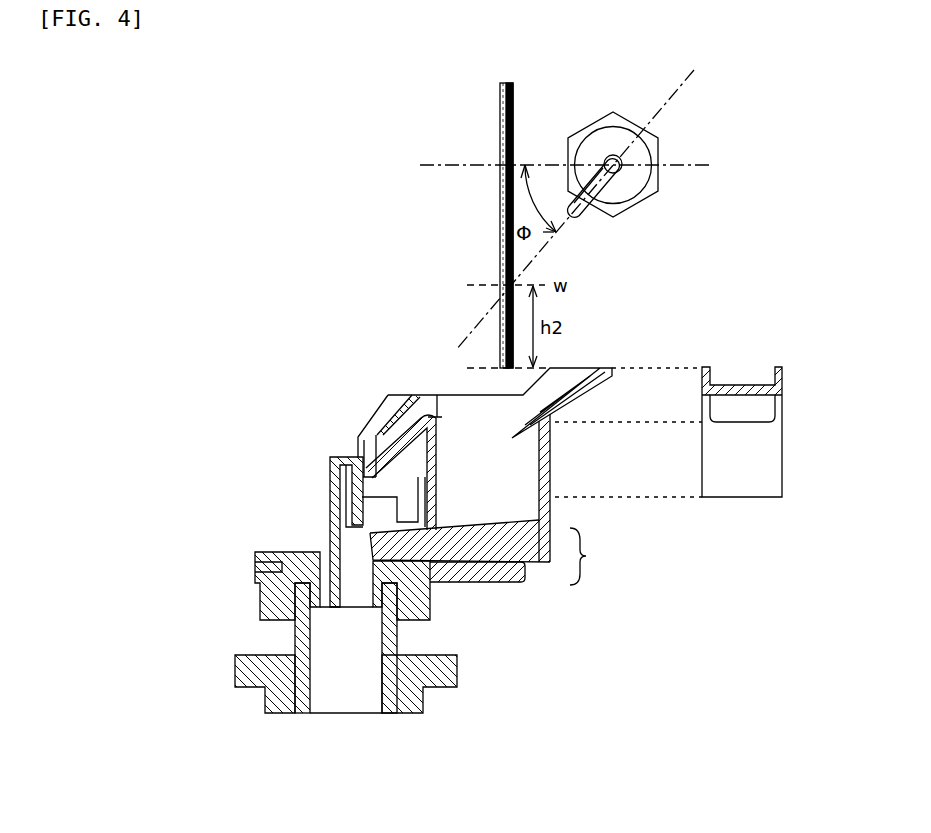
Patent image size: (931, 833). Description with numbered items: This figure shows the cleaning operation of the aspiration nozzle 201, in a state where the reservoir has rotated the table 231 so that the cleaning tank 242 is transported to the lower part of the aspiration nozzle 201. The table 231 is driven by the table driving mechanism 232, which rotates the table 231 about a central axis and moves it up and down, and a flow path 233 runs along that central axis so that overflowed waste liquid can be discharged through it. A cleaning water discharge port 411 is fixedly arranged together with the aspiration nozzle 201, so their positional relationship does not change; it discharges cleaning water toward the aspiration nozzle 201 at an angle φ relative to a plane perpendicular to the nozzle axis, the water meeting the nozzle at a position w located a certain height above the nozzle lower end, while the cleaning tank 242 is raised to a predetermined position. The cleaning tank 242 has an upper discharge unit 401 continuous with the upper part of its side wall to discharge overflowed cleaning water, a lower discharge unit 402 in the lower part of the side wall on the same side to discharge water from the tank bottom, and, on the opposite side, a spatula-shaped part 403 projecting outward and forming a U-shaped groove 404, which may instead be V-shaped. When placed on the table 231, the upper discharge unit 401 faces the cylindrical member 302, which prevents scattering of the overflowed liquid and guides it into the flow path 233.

The aspiration nozzle 201 is at (500, 120).
The cleaning water discharge port 411 is at (638, 208).
The upper discharge unit 401 is at (400, 396).
The spatula-shaped part 403 is at (600, 368).
The U-shaped groove 404 is at (743, 378).
The cylindrical member 302 is at (330, 457).
The cleaning tank 242 is at (720, 462).
The table 231 is at (442, 574).
The lower discharge unit 402 is at (470, 583).
The table driving mechanism 232 is at (448, 677).
The flow path 233 is at (328, 709).